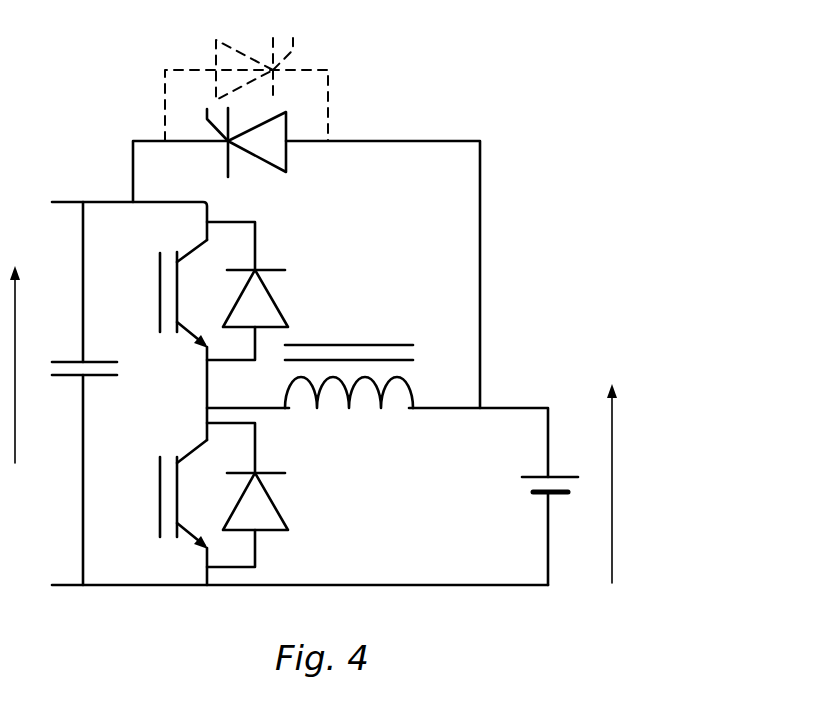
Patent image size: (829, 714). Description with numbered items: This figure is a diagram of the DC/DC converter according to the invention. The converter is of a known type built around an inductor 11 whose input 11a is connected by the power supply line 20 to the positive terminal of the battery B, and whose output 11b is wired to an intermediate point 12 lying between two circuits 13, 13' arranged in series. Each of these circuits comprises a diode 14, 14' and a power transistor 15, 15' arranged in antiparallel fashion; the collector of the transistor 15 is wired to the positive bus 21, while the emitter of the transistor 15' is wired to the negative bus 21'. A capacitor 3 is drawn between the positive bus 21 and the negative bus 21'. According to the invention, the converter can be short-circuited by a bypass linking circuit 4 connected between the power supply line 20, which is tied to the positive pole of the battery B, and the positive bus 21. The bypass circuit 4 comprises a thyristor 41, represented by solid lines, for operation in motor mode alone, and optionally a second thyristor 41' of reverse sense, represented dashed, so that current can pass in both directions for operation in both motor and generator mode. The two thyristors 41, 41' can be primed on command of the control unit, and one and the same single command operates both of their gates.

The bypass linking circuit 4 is at (433, 136).
The thyristor 41 is at (279, 151).
The second thyristor 41' is at (246, 73).
The positive bus 21 is at (129, 192).
The negative bus 21' is at (292, 558).
The smoothing capacitor 3 is at (83, 378).
The circuit 13 is at (153, 340).
The power transistor 15 is at (144, 286).
The diode 14 is at (271, 291).
The circuit 13' is at (151, 512).
The power transistor 15' is at (142, 491).
The diode 14' is at (274, 495).
The intermediate point 12 is at (207, 408).
The inductor 11 is at (360, 420).
The input 11a is at (413, 410).
The output 11b is at (285, 410).
The power supply line 20 is at (510, 408).
The battery B is at (548, 476).